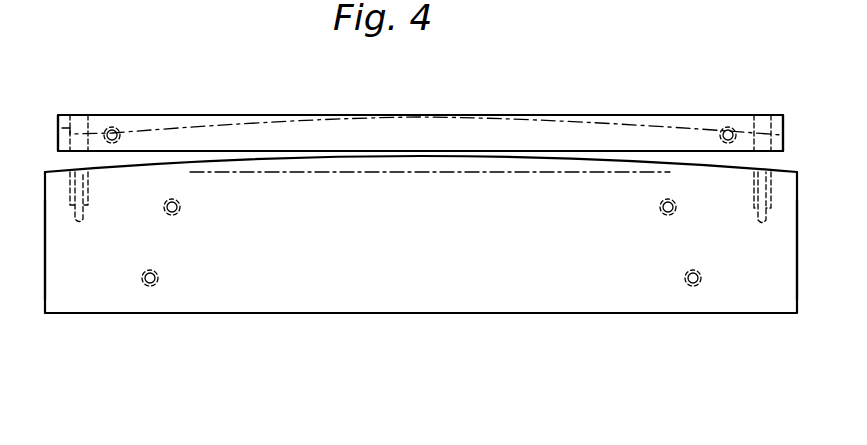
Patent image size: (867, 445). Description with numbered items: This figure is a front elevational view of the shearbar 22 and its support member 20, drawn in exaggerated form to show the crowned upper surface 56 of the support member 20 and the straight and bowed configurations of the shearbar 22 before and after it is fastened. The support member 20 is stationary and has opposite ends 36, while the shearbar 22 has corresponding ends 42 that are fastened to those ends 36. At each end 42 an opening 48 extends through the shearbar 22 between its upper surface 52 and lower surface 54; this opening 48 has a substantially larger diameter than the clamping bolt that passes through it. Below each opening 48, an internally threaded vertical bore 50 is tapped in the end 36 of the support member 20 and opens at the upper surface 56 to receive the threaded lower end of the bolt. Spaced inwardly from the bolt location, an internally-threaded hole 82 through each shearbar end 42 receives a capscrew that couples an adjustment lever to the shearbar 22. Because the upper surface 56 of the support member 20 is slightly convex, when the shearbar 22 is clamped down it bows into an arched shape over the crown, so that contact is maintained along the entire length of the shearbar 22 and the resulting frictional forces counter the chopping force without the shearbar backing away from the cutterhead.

The support member 20 is at (413, 298).
The shearbar 22 is at (408, 127).
The opposite ends of the support member 36 is at (80, 298).
The end of the shearbar 42 is at (56, 120).
The opening 48 is at (85, 126).
The internally threaded vertical bore 50 is at (88, 205).
The upper surface of the shearbar 52 is at (188, 114).
The lower surface of the shearbar 54 is at (238, 160).
The upper surface of the support member 56 is at (707, 165).
The internally-threaded hole 82 is at (117, 128).